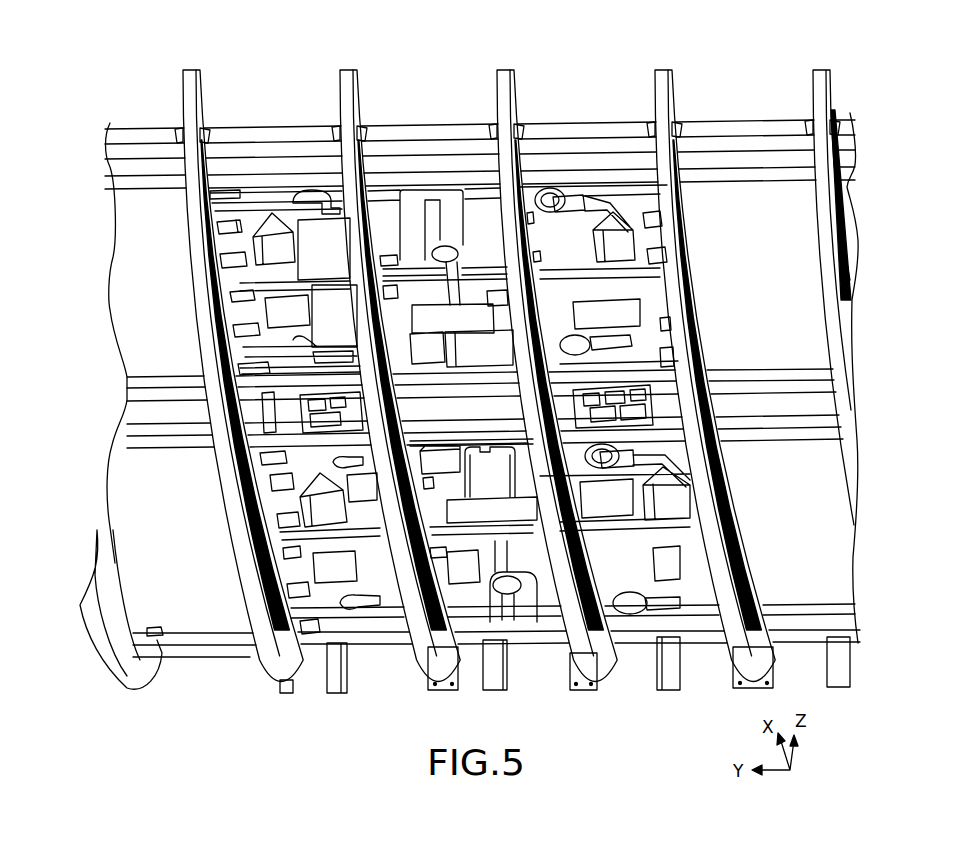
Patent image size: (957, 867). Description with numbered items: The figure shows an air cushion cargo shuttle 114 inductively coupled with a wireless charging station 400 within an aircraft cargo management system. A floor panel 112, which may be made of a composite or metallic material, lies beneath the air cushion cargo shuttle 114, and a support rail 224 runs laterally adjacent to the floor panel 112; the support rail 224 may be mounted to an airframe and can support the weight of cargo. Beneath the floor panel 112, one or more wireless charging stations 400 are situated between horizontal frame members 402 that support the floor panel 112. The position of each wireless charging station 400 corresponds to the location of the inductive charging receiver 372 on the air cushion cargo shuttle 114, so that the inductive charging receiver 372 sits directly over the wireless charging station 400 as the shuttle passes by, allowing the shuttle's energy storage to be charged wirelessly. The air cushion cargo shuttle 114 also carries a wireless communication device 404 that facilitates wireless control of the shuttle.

The floor panel 112 is at (805, 258).
The air cushion cargo shuttle 114 is at (483, 200).
The support rail 224 is at (598, 163).
The inductive charging receiver 372 is at (583, 317).
The wireless charging station 400 is at (457, 323).
The horizontal frame member 402 is at (692, 260).
The wireless communication device 404 is at (445, 245).